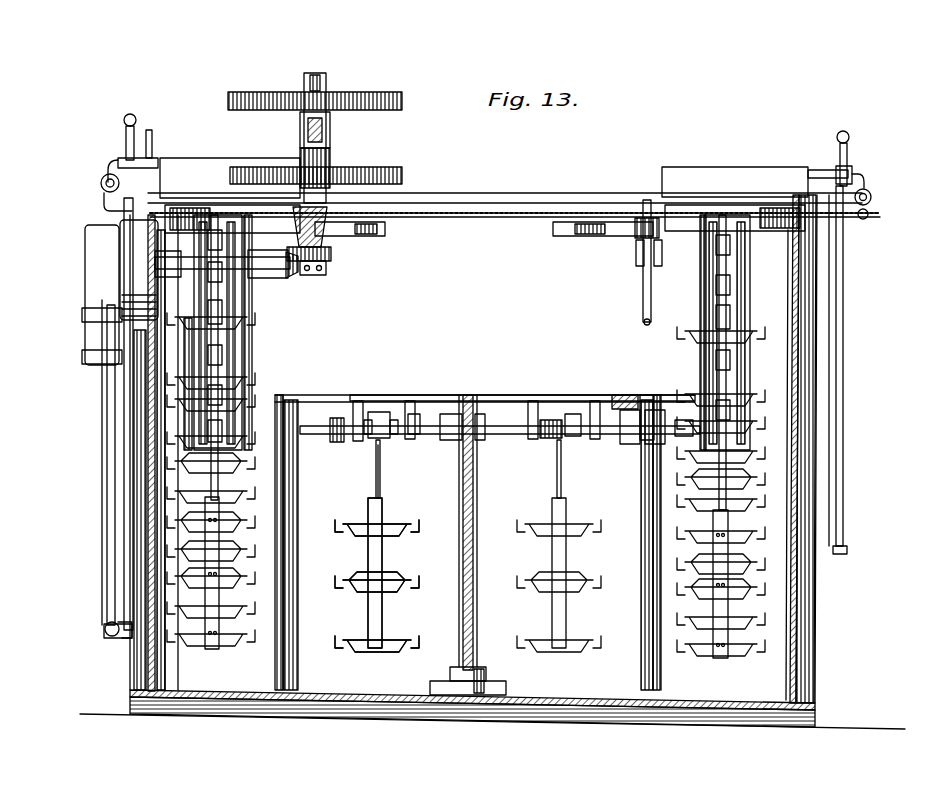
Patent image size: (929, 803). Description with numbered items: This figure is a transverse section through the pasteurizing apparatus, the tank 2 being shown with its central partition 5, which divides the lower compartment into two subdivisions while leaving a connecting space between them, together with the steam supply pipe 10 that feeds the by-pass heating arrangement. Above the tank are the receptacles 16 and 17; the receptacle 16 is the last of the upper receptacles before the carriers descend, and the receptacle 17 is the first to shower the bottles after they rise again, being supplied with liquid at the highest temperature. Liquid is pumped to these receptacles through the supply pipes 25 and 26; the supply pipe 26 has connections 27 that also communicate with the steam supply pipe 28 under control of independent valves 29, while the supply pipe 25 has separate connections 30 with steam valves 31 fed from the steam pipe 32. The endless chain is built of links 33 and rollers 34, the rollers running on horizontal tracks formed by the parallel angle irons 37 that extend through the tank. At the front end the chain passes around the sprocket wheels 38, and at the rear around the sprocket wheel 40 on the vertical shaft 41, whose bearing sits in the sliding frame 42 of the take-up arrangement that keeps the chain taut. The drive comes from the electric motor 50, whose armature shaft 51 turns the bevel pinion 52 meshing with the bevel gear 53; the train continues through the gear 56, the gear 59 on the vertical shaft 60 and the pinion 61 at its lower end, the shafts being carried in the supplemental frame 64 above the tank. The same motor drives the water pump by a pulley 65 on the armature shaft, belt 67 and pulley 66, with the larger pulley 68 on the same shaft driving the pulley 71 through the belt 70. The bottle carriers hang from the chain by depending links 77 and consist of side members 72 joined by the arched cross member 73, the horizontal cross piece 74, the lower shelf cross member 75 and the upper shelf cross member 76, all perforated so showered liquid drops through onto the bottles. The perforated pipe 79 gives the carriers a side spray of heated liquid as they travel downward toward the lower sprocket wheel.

The frame 2 is at (265, 570).
The central partition 5 is at (476, 620).
The steam supply pipe 10 is at (104, 628).
The receptacle 16 is at (725, 177).
The receptacle 17 is at (195, 170).
The supply pipe 25 is at (843, 332).
The supply pipe 26 is at (137, 125).
The connections 27 is at (120, 160).
The steam supply pipe 28 is at (110, 209).
The valves 29 is at (100, 183).
The connections 30 is at (822, 170).
The steam valves 31 is at (871, 192).
The steam pipe 32 is at (870, 213).
The links 33 is at (236, 336).
The rollers 34 is at (230, 222).
The angle irons 37 is at (236, 362).
The sprocket wheels 38 is at (382, 236).
The sprocket wheel 40 is at (628, 440).
The vertical shaft 41 is at (474, 572).
The sliding frame 42 is at (622, 396).
The electric motor 50 is at (139, 270).
The armature shaft 51 is at (248, 278).
The bevel pinion 52 is at (293, 276).
The bevel gear 53 is at (332, 254).
The gear 56 is at (392, 172).
The gear 59 is at (352, 94).
The vertical shaft 60 is at (314, 74).
The pinion 61 is at (332, 162).
The supplemental frame 64 is at (330, 130).
The pulley 65 is at (90, 265).
The pulley 66 is at (88, 355).
The belt 67 is at (90, 318).
The larger pulley 68 is at (210, 354).
The belt 70 is at (118, 468).
The pulley 71 is at (126, 638).
The side members 72 is at (368, 553).
The arched cross member 73 is at (384, 512).
The horizontal cross piece 74 is at (408, 522).
The cross member 75 is at (402, 638).
The cross member 76 is at (410, 572).
The depending links 77 is at (382, 478).
The pipe 79 is at (642, 300).